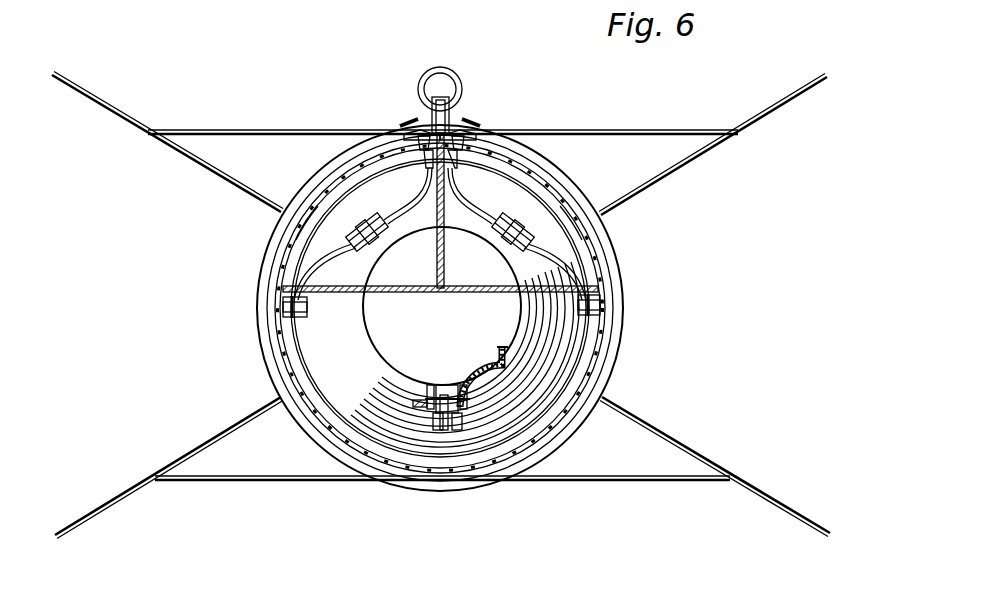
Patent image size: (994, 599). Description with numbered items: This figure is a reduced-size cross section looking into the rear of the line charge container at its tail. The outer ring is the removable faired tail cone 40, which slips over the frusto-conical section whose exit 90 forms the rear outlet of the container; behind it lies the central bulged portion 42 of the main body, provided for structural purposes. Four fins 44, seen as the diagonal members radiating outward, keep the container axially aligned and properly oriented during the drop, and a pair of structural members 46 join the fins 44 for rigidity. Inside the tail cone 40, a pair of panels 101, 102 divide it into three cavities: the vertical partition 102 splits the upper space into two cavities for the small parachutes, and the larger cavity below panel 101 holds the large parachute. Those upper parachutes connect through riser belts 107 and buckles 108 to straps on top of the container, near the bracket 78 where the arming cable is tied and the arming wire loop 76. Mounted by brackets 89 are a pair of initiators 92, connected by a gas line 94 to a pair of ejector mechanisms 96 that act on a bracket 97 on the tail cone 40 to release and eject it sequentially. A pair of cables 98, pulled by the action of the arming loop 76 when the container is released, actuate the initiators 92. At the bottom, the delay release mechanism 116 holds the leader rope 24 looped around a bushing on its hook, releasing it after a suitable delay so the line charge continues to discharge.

The leader rope 24 is at (498, 348).
The tail cone 40 is at (310, 428).
The central bulged portion 42 is at (262, 352).
The fins 44 is at (112, 104).
The structural members 46 is at (306, 130).
The arming wire loop 76 is at (452, 70).
The bracket 78 is at (450, 108).
The brackets 89 is at (368, 240).
The exit 90 is at (438, 384).
The initiators 92 is at (330, 196).
The gas line 94 is at (294, 262).
The ejector mechanisms 96 is at (305, 318).
The bracket 97 is at (284, 307).
The cables 98 is at (410, 200).
The panel 101 is at (406, 293).
The vertical partition 102 is at (445, 274).
The riser belts 107 is at (426, 158).
The buckles 108 is at (410, 120).
The delay release mechanism 116 is at (402, 398).